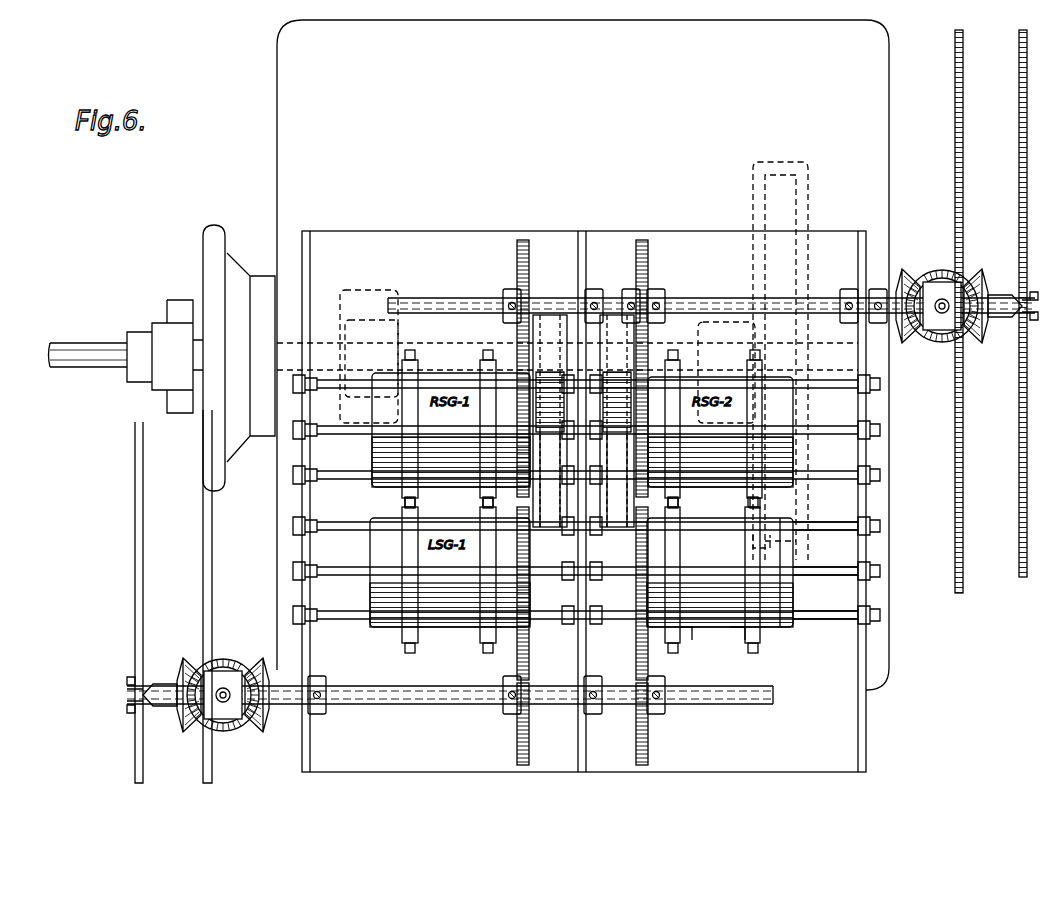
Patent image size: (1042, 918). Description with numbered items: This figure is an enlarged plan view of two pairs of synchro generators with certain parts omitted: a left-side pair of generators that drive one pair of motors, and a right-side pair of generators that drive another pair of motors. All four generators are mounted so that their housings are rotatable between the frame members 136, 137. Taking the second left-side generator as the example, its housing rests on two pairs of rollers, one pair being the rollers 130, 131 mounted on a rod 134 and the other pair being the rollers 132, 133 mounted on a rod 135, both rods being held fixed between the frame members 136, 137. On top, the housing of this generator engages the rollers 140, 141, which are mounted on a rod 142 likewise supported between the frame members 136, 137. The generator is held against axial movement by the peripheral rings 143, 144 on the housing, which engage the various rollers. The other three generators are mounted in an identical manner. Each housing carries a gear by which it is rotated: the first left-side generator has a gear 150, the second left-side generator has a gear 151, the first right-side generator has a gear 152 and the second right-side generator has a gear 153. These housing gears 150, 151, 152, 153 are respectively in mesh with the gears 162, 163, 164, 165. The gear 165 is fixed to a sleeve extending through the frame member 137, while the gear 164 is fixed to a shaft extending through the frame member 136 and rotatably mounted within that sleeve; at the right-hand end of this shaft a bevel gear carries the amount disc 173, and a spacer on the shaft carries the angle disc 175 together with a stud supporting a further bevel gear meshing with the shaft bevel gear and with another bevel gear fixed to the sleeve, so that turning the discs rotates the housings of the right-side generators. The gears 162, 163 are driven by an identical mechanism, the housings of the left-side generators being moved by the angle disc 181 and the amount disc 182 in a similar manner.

The roller 130 is at (676, 509).
The roller 131 is at (752, 507).
The roller 132 is at (673, 642).
The roller 133 is at (757, 638).
The rod 134 is at (818, 530).
The rod 135 is at (808, 620).
The frame member 136 is at (585, 772).
The frame member 137 is at (862, 772).
The roller 140 is at (672, 553).
The roller 141 is at (773, 558).
The rod 142 is at (806, 578).
The peripheral ring 143 is at (692, 628).
The peripheral ring 144 is at (737, 628).
The gear 150 is at (529, 625).
The gear 151 is at (640, 617).
The gear 152 is at (520, 378).
The gear 153 is at (645, 372).
The gear 162 is at (517, 740).
The gear 163 is at (648, 740).
The gear 164 is at (517, 252).
The gear 165 is at (648, 252).
The amount disc 173 is at (1019, 483).
The angle disc 175 is at (955, 480).
The angle disc 181 is at (208, 547).
The amount disc 182 is at (135, 535).